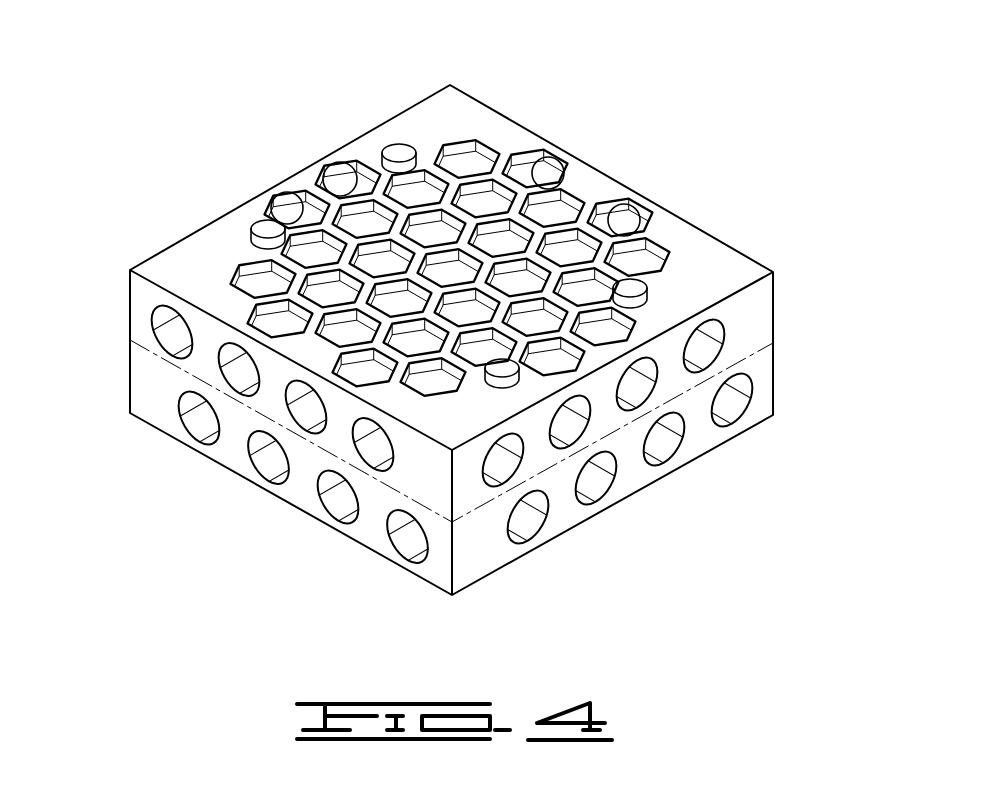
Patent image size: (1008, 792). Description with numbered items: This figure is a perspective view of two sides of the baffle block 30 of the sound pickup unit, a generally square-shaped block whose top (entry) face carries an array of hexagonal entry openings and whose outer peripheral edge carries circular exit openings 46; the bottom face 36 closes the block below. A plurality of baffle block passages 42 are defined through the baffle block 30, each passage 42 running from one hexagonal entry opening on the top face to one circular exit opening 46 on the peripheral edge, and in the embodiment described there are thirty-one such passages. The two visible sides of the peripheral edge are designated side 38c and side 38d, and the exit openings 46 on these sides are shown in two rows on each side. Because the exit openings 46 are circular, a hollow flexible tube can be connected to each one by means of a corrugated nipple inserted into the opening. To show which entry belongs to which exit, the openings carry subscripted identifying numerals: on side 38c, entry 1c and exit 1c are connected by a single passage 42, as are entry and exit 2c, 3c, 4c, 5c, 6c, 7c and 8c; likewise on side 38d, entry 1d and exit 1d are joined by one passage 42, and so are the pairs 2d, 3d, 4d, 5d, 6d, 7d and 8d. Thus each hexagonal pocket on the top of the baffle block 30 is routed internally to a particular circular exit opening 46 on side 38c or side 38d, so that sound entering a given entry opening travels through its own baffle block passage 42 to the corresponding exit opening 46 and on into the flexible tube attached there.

The baffle block 30 is at (468, 90).
The bottom face 36 is at (430, 387).
The side of peripheral edge 38c is at (318, 450).
The side of peripheral edge 38d is at (760, 360).
The baffle block passage 42 is at (737, 335).
The exit opening 46 is at (200, 457).
The entry and exit openings of a baffle block passage 1c is at (345, 358).
The entry and exit openings of a baffle block passage 2c is at (270, 317).
The entry and exit openings of a baffle block passage 3c is at (363, 323).
The entry and exit openings of a baffle block passage 4c is at (257, 280).
The entry and exit openings of a baffle block passage 5c is at (345, 505).
The entry and exit openings of a baffle block passage 6c is at (365, 450).
The entry and exit openings of a baffle block passage 7c is at (390, 300).
The entry and exit openings of a baffle block passage 8c is at (438, 267).
The entry and exit openings of a baffle block passage 1d is at (488, 337).
The entry and exit openings of a baffle block passage 2d is at (652, 484).
The entry and exit openings of a baffle block passage 3d is at (615, 337).
The entry and exit openings of a baffle block passage 4d is at (588, 297).
The entry and exit openings of a baffle block passage 5d is at (457, 303).
The entry and exit openings of a baffle block passage 6d is at (578, 253).
The entry and exit openings of a baffle block passage 7d is at (525, 280).
The entry and exit openings of a baffle block passage 8d is at (640, 215).